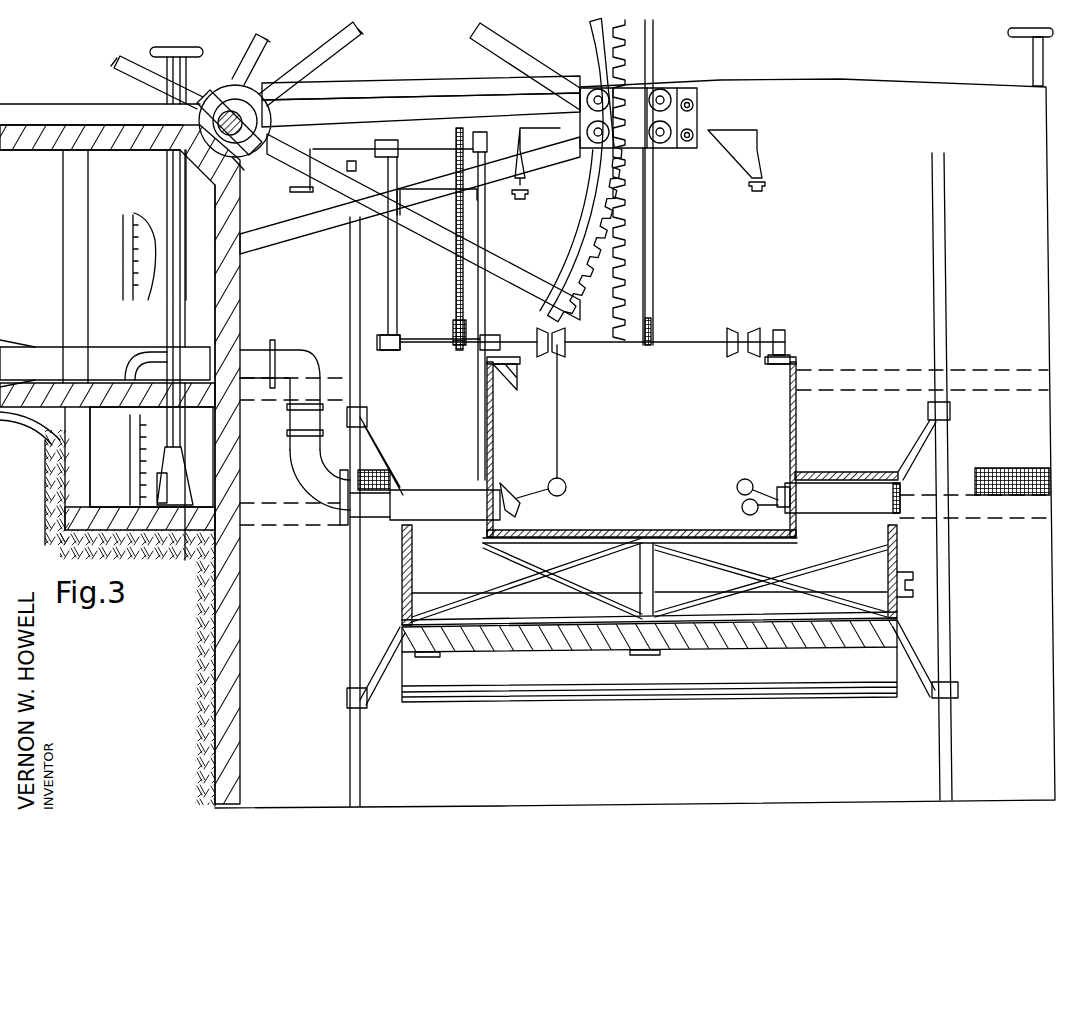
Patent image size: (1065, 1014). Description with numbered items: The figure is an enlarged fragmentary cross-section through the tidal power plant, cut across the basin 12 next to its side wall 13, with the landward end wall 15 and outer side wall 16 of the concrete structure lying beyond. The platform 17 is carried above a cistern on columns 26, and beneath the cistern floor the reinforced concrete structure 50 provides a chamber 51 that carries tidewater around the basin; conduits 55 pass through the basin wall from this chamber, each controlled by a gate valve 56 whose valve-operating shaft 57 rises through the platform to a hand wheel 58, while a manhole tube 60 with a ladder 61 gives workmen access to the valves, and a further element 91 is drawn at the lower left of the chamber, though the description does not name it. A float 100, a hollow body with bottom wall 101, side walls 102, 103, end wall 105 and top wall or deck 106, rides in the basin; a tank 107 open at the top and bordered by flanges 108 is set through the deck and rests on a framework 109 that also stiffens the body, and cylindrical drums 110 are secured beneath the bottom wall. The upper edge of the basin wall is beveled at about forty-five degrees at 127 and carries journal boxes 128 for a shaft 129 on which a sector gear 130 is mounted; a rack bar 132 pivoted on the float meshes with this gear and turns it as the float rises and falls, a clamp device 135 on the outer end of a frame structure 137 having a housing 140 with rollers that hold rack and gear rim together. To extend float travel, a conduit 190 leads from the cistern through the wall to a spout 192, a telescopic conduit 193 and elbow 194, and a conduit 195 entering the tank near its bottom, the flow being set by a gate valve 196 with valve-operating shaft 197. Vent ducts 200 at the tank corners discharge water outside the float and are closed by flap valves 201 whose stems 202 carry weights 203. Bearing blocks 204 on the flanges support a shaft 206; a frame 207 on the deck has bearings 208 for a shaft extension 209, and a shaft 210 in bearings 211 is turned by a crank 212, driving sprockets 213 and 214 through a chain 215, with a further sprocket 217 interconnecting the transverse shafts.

The basin 12 is at (808, 105).
The side wall 13 is at (205, 652).
The end wall 15 is at (425, 103).
The side wall 16 is at (362, 95).
The platform 17 is at (25, 140).
The columns 26 is at (62, 230).
The reinforced concrete structure 50 is at (50, 514).
The chamber 51 is at (48, 486).
The conduits 55 is at (242, 490).
The gate valve 56 is at (180, 535).
The valve-operating shaft 57 is at (167, 178).
The hand wheel 58 is at (152, 51).
The manhole tubes 60 is at (125, 203).
The ladders 61 is at (130, 432).
The conduit 91 is at (30, 452).
The float 100 is at (350, 590).
The bottom wall 101 is at (558, 622).
The side wall 102 is at (410, 590).
The side wall 103 is at (885, 555).
The end wall 105 is at (540, 328).
The top wall 106 is at (818, 472).
The tank 107 is at (798, 430).
The flanges 108 is at (505, 375).
The framework 109 is at (638, 580).
The cylindrical drums 110 is at (825, 700).
The beveled face 127 is at (248, 158).
The journal boxes 128 is at (232, 92).
The shaft 129 is at (245, 118).
The sector gear 130 is at (600, 52).
The rack bar 132 is at (662, 245).
The clamp device 135 is at (700, 100).
The frame structure 137 is at (520, 50).
The housing 140 is at (665, 88).
The fluid passage or conduit 190 is at (55, 360).
The spout or nipple 192 is at (300, 358).
The telescopic conduit 193 is at (285, 408).
The elbow 194 is at (310, 500).
The conduit 195 is at (360, 525).
The gate valve 196 is at (128, 362).
The valve-operating shaft 197 is at (170, 320).
The vent ducts 200 is at (865, 515).
The flap valve 201 is at (487, 440).
The stem 202 is at (742, 510).
The weight 203 is at (737, 484).
The bearing blocks 204 is at (779, 330).
The shaft 206 is at (678, 340).
The frame 207 is at (388, 255).
The bearings 208 is at (418, 340).
The shaft extension 209 is at (445, 348).
The shaft 210 is at (433, 150).
The bearings 211 is at (398, 126).
The crank 212 is at (292, 187).
The chain sprocket 213 is at (460, 128).
The chain sprocket 214 is at (458, 362).
The chain 215 is at (478, 272).
The chain sprocket 217 is at (648, 348).